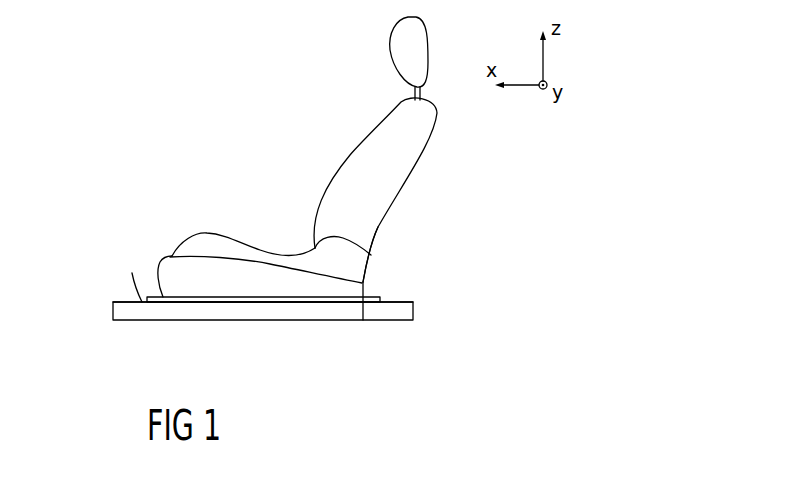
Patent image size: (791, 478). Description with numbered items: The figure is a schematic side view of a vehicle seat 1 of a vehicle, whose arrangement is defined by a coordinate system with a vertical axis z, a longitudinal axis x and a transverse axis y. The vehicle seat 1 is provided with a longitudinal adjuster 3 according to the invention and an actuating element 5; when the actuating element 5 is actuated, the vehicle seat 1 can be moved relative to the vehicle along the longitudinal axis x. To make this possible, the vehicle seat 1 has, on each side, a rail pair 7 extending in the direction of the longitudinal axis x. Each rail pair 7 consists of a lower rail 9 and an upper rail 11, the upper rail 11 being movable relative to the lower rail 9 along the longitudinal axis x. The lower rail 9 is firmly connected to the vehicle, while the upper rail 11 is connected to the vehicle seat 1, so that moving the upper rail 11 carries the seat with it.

The vehicle seat 1 is at (269, 112).
The longitudinal adjuster 3 is at (110, 295).
The actuating element 5 is at (128, 278).
The rail pair 7 is at (381, 279).
The lower rail 9 is at (390, 315).
The upper rail 11 is at (363, 320).